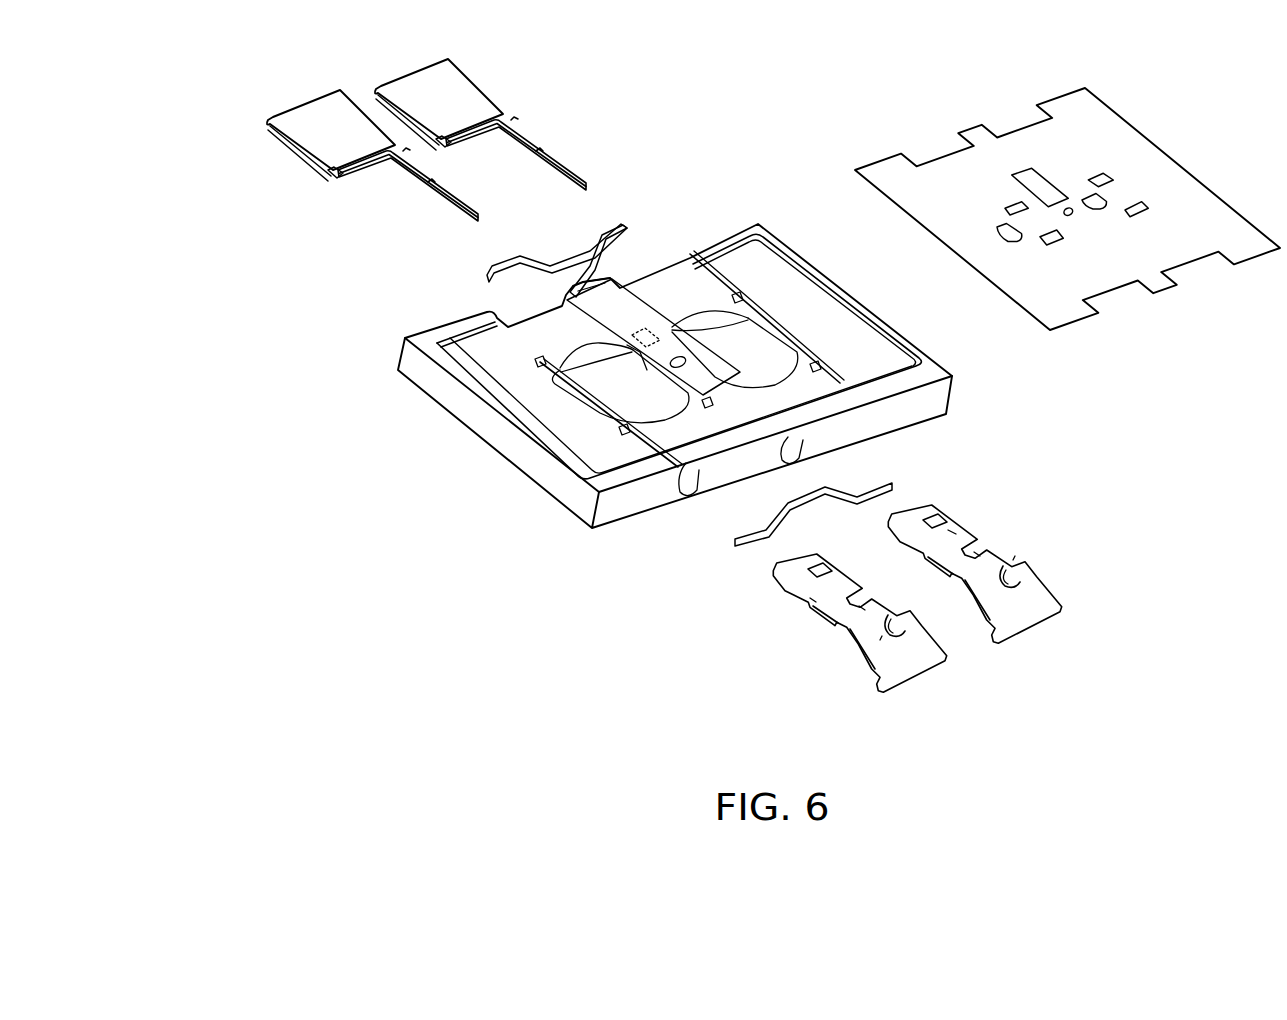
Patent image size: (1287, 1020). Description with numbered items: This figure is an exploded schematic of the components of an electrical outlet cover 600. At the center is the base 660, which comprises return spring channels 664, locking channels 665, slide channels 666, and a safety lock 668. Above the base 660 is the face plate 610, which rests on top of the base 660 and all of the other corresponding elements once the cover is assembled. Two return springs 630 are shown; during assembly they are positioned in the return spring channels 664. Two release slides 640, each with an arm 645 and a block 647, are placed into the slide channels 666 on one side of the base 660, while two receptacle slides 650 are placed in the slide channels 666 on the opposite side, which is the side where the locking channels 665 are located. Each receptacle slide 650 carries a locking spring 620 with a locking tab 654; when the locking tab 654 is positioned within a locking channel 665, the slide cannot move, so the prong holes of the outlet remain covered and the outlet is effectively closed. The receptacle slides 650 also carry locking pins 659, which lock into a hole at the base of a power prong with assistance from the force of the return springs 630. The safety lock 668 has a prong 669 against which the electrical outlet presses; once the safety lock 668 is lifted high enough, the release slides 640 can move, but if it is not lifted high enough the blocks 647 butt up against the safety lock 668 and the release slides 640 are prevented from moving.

The outlet cover 600 is at (455, 636).
The face plate 610 is at (955, 168).
The locking spring 620 is at (1013, 560).
The return spring 630 is at (502, 268).
The release slide 640 is at (316, 118).
The cover arm 645 is at (456, 207).
The block 647 is at (333, 175).
The receptacle slide 650 is at (1035, 622).
The locking tab 654 is at (1015, 568).
The locking pin 659 is at (952, 532).
The base 660 is at (928, 402).
The return spring channel 664 is at (587, 280).
The locking channel 665 is at (820, 368).
The slide channel 666 is at (683, 293).
The safety lock 668 is at (666, 350).
The prong 669 is at (540, 362).